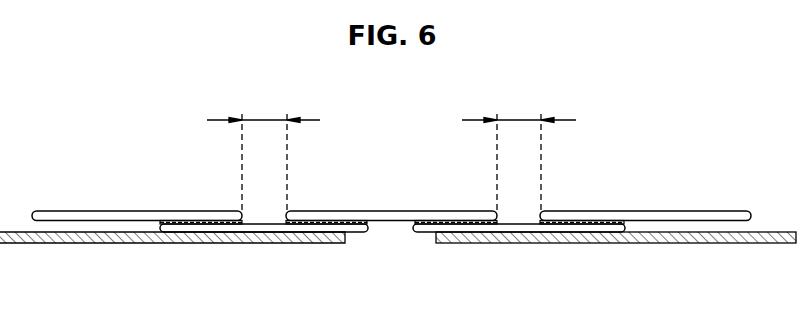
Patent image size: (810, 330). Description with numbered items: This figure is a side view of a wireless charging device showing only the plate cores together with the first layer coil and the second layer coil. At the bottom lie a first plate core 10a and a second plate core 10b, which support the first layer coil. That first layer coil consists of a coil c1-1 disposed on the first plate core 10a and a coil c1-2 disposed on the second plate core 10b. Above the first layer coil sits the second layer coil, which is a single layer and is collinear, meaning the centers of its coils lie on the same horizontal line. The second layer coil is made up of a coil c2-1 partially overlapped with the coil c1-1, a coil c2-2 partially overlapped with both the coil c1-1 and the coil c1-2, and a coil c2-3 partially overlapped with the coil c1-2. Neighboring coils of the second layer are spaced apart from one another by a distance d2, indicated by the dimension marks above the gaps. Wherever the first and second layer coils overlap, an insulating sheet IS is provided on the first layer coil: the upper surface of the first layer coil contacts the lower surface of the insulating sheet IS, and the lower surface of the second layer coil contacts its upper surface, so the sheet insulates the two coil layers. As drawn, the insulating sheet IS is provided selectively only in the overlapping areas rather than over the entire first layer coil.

The first plate core 10a is at (125, 243).
The second plate core 10b is at (602, 243).
The 1-1 coil c1-1 is at (238, 229).
The 1-2 coil c1-2 is at (508, 229).
The 2-1 coil c2-1 is at (103, 216).
The 2-2 coil c2-2 is at (391, 216).
The 2-3 coil c2-3 is at (672, 216).
The insulating sheet IS is at (191, 222).
The distance d2 is at (391, 149).